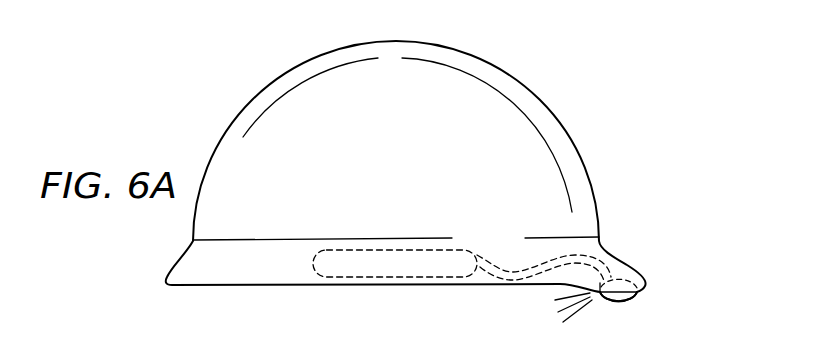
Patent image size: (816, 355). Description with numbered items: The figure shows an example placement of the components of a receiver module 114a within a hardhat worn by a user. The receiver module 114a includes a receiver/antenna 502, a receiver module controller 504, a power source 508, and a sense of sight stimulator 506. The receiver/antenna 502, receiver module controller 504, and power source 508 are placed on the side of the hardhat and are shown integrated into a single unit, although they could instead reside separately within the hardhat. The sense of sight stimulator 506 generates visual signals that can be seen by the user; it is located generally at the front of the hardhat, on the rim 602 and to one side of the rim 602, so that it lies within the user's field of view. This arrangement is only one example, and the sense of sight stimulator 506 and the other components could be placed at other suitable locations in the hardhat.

The receiver module 114a is at (496, 59).
The receiver/antenna 502 is at (392, 294).
The receiver module controller 504 is at (392, 294).
The power source 508 is at (387, 278).
The rim 602 is at (627, 263).
The sense of sight stimulator 506 is at (633, 303).